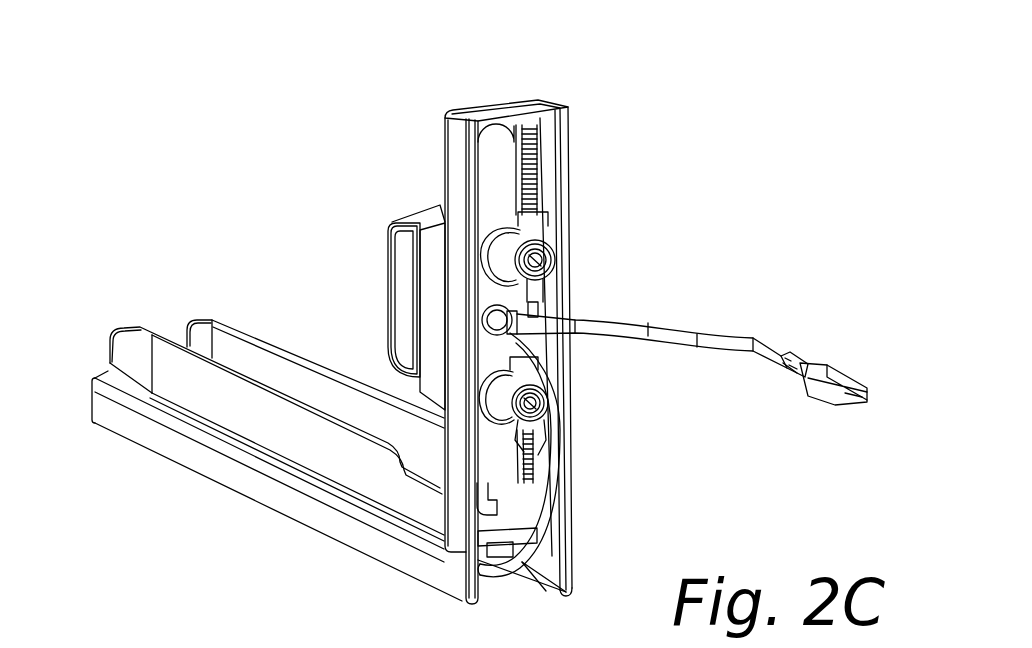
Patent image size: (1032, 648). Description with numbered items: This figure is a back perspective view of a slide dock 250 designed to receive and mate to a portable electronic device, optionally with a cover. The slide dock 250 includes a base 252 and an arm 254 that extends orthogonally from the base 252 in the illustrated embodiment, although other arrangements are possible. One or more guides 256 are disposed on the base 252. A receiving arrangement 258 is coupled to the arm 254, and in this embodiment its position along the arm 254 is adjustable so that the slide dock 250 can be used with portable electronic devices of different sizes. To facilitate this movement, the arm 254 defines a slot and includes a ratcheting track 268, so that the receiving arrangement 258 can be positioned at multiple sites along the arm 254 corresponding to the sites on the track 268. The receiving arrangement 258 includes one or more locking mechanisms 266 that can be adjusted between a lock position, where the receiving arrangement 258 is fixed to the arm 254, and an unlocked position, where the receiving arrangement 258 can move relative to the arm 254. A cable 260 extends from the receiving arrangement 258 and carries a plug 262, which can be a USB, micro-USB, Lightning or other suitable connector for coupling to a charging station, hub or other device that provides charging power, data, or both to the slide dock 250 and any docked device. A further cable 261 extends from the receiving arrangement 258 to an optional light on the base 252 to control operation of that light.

The slide dock 250 is at (181, 172).
The base 252 is at (242, 503).
The arm 254 is at (445, 160).
The guides 256 is at (216, 325).
The receiving arrangement 258 is at (395, 225).
The cable 260 is at (722, 337).
The cable 261 is at (500, 575).
The plug 262 is at (822, 362).
The locking mechanisms 266 is at (542, 237).
The ratcheting track 268 is at (532, 163).